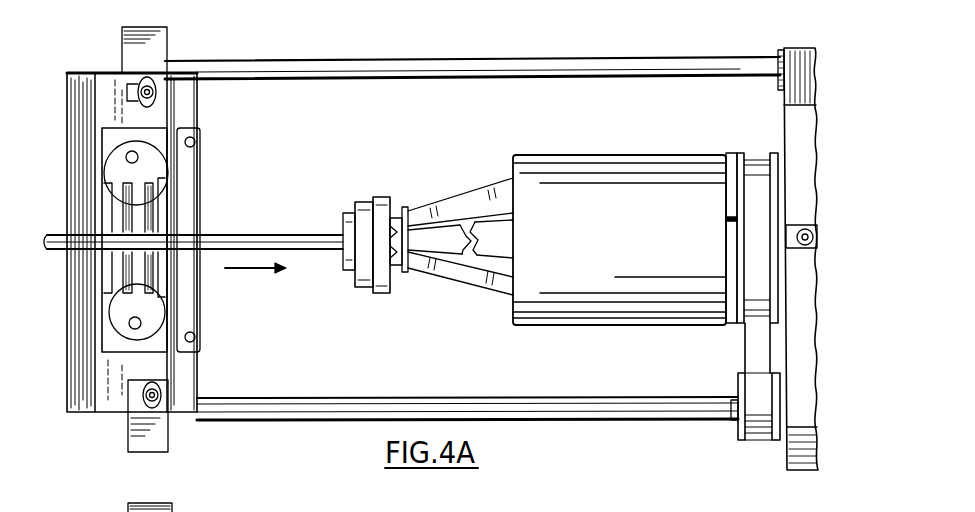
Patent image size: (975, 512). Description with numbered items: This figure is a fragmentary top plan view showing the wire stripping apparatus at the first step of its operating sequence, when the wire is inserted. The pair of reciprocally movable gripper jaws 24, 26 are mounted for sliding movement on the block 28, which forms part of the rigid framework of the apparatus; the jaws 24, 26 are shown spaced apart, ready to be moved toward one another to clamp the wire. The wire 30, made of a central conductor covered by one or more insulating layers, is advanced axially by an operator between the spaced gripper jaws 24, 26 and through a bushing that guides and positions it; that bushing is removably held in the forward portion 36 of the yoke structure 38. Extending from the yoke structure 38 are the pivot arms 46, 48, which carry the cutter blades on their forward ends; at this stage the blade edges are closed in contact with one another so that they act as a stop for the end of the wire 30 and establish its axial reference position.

The gripper jaw 24 is at (104, 203).
The gripper jaw 26 is at (107, 290).
The block 28 is at (158, 368).
The wire 30 is at (270, 233).
The forward portion 36 is at (367, 200).
The yoke structure 38 is at (507, 229).
The pivot arm 46 is at (457, 200).
The pivot arm 48 is at (468, 278).